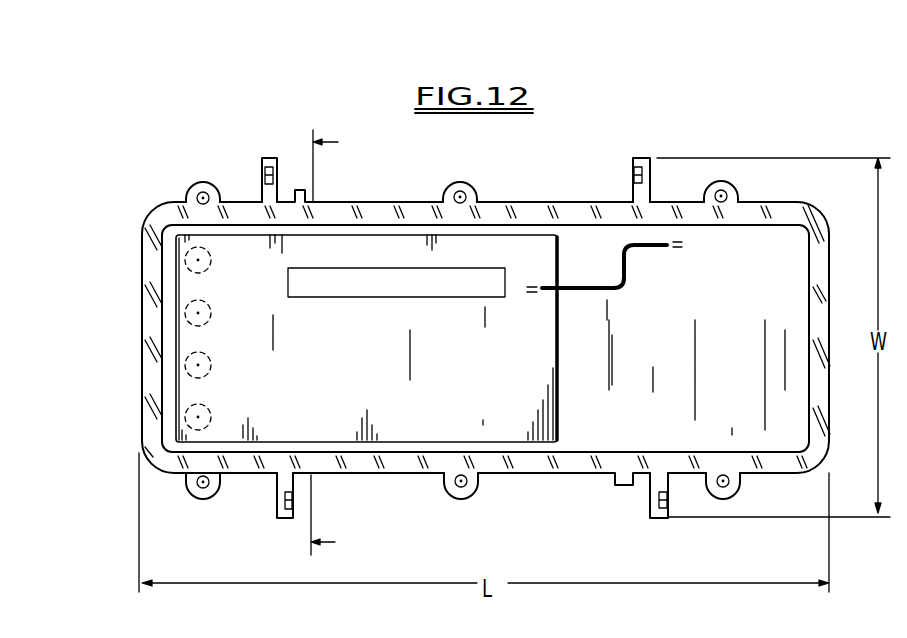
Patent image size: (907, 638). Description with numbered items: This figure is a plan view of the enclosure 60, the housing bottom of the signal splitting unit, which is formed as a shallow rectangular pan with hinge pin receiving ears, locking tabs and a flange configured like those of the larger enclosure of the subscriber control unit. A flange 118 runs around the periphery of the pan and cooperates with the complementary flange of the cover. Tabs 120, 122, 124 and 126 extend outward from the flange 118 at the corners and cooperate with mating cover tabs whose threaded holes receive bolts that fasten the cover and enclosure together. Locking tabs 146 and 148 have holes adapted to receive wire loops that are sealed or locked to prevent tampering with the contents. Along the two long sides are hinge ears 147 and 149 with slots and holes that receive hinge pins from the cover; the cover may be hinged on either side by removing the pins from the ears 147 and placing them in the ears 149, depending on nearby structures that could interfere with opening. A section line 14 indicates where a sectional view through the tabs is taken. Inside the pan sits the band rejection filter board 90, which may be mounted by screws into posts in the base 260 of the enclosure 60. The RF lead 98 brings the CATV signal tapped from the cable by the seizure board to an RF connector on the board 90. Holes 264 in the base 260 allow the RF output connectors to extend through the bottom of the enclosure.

The section line 14 is at (310, 341).
The enclosure 60 is at (829, 397).
The band rejection filter board 90 is at (542, 357).
The RF lead 98 is at (621, 287).
The flange 118 is at (141, 391).
The tab 120 is at (203, 497).
The tab 122 is at (741, 484).
The tab 124 is at (190, 187).
The tab 126 is at (738, 189).
The tab 146 is at (446, 188).
The ear 147 is at (262, 160).
The tab 148 is at (456, 496).
The ear 149 is at (276, 505).
The base 260 is at (597, 433).
The holes 264 is at (205, 300).